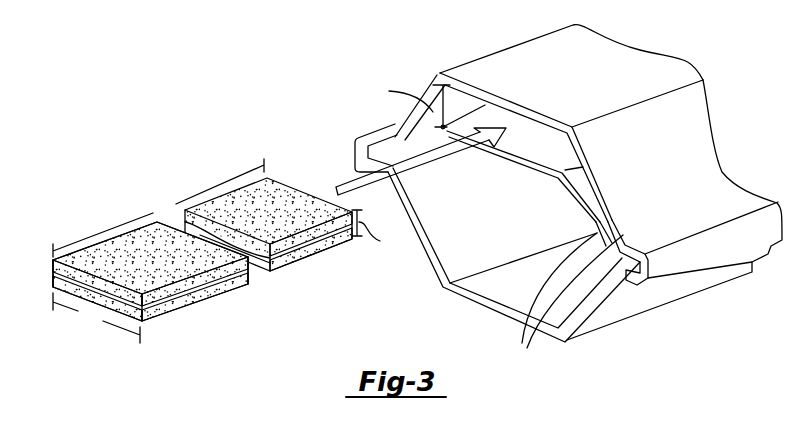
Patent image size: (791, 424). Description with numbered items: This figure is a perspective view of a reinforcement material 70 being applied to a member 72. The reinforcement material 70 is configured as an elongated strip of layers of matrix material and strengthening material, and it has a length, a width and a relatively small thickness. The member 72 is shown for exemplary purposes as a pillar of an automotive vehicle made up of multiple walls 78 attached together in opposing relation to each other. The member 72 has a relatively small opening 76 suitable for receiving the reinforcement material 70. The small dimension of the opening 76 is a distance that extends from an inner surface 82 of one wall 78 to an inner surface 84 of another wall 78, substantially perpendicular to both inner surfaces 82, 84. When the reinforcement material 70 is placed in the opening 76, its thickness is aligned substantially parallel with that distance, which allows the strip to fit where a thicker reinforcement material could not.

The reinforcement material 70 is at (262, 312).
The member 72 is at (655, 340).
The opening 76 is at (493, 122).
The walls 78 is at (512, 315).
The inner surface 82 is at (517, 120).
The inner surface 84 is at (533, 137).